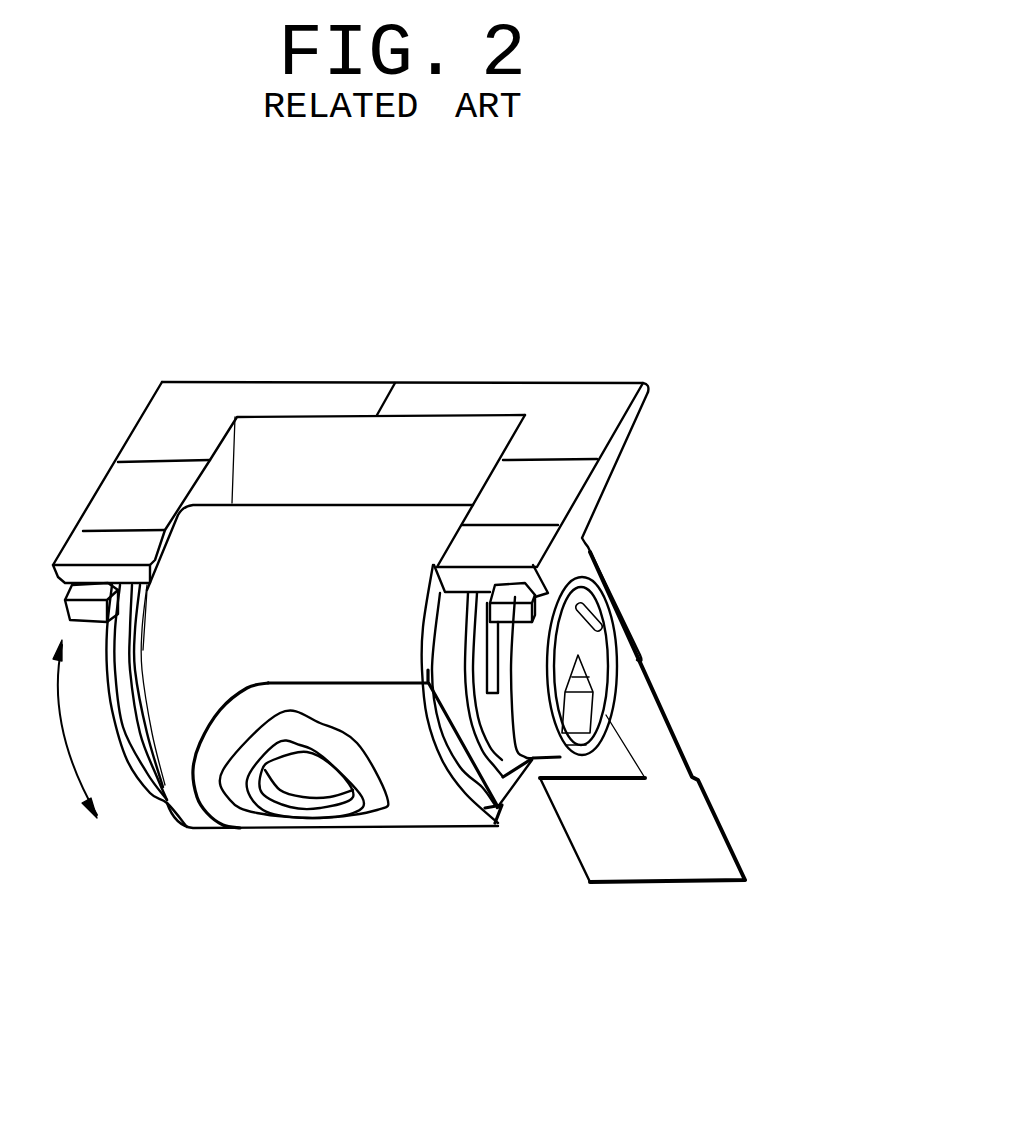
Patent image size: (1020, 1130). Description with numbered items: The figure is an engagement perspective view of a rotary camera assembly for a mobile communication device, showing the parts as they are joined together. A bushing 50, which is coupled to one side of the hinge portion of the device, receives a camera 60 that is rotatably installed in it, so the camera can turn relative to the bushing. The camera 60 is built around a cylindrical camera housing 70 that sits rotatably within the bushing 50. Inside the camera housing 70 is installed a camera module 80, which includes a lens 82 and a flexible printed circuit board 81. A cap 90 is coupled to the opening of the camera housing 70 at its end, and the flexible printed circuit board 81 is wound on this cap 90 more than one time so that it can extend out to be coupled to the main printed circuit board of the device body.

The bushing 50 is at (338, 409).
The camera 60 is at (263, 932).
The camera housing 70 is at (170, 768).
The camera module 80 is at (469, 807).
The flexible printed circuit board 81 is at (640, 825).
The lens 82 is at (310, 841).
The cap 90 is at (575, 643).